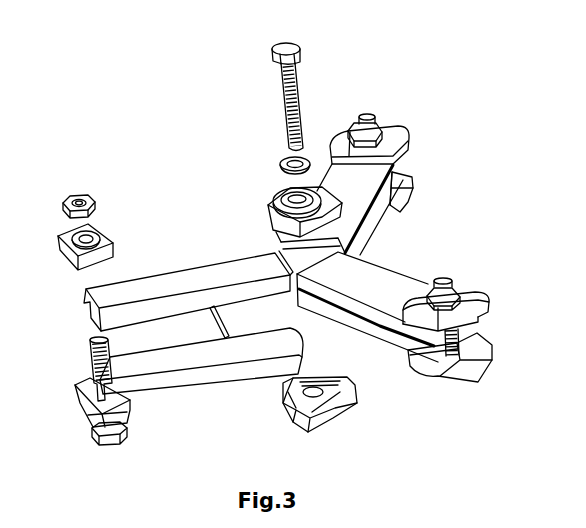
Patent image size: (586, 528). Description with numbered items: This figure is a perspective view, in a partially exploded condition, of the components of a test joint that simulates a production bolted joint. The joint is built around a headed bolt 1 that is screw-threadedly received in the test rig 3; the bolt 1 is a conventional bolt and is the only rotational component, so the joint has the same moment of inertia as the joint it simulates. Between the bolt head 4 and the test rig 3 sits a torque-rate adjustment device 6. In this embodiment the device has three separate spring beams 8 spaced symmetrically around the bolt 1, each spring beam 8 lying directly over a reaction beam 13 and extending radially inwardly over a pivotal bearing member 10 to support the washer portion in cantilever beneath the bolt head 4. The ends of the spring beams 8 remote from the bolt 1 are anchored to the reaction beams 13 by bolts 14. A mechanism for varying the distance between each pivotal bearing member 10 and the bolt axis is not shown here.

The headed bolt 1 is at (282, 83).
The test rig 3 is at (345, 410).
The bolt head 4 is at (293, 47).
The torque-rate adjustment device 6 is at (162, 260).
The spring beam 8 is at (204, 270).
The pivotal bearing member 10 is at (217, 331).
The reaction beam 13 is at (220, 380).
The bolt 14 is at (88, 352).